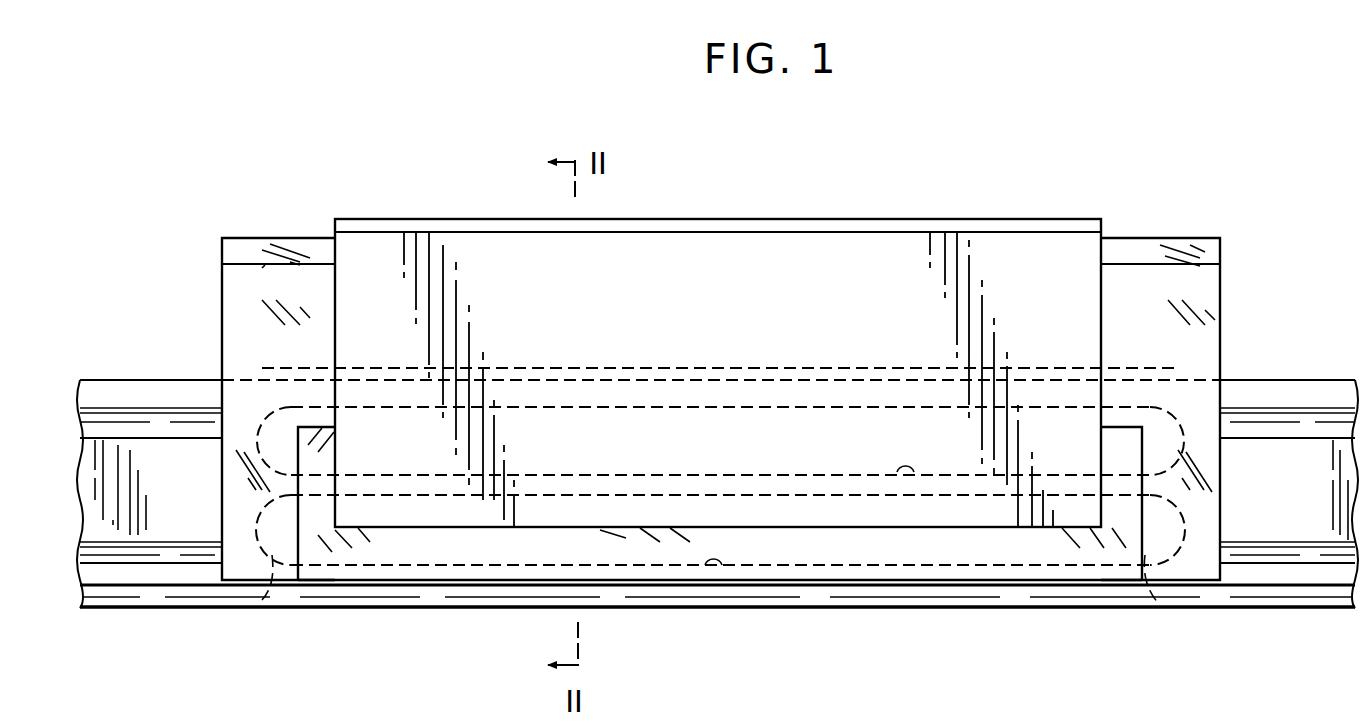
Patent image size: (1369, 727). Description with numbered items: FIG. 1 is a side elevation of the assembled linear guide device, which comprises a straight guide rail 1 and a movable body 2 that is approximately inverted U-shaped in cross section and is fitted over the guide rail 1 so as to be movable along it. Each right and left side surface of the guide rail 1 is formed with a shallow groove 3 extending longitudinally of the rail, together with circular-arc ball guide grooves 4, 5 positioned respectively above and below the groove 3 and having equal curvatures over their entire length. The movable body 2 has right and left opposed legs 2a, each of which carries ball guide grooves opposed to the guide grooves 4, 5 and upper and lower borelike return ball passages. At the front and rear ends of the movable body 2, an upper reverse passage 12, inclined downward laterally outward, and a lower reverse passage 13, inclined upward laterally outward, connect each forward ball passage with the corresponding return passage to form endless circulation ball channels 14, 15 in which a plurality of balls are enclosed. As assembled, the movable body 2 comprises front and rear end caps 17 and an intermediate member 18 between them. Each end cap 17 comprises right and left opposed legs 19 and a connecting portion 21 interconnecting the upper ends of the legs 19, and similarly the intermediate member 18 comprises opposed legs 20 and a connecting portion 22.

The guide rail 1 is at (1302, 374).
The movable body 2 is at (316, 204).
The legs 2a is at (495, 575).
The shallow groove 3 is at (1267, 525).
The ball guide groove 4 is at (1320, 420).
The ball guide groove 5 is at (1305, 562).
The reverse passage 12 is at (262, 370).
The reverse passage 13 is at (268, 580).
The endless circulation ball channel 14 is at (914, 472).
The endless circulation ball channel 15 is at (722, 565).
The end cap 17 is at (222, 283).
The intermediate member 18 is at (668, 246).
The legs 19 is at (235, 482).
The legs 20 is at (635, 512).
The connecting portion 21 is at (270, 282).
The connecting portion 22 is at (800, 252).